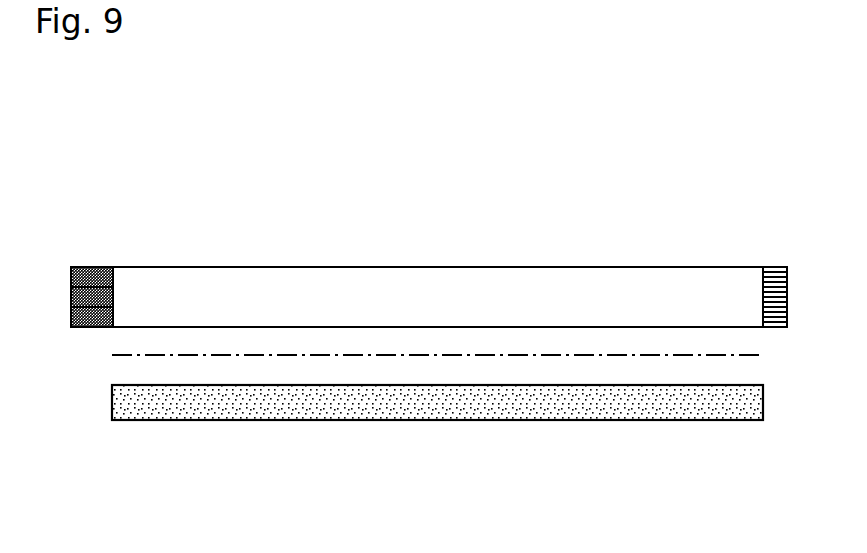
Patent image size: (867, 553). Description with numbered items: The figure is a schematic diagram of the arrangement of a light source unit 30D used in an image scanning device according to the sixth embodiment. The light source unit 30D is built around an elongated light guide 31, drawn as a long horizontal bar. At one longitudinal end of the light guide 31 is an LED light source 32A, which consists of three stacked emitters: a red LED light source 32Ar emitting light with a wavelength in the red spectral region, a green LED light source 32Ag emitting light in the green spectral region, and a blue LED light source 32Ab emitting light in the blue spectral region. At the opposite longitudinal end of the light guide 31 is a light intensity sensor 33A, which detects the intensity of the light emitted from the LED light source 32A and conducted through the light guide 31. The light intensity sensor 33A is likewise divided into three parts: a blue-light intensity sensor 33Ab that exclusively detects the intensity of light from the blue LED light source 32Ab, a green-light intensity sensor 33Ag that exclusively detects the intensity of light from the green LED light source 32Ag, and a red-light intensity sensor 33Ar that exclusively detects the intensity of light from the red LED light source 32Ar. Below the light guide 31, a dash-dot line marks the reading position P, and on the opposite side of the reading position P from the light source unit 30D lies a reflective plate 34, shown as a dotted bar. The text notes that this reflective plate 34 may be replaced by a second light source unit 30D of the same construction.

The light source unit 30D is at (400, 265).
The light guide 31 is at (345, 282).
The LED light source 32A is at (90, 180).
The red LED light source 32Ar is at (90, 272).
The green LED light source 32Ag is at (107, 298).
The blue LED light source 32Ab is at (107, 320).
The light intensity sensor 33A is at (603, 180).
The blue-light intensity sensor 33Ab is at (762, 317).
The green-light intensity sensor 33Ag is at (762, 295).
The red-light intensity sensor 33Ar is at (782, 272).
The reading position P is at (232, 355).
The reflective plate 34 is at (350, 412).